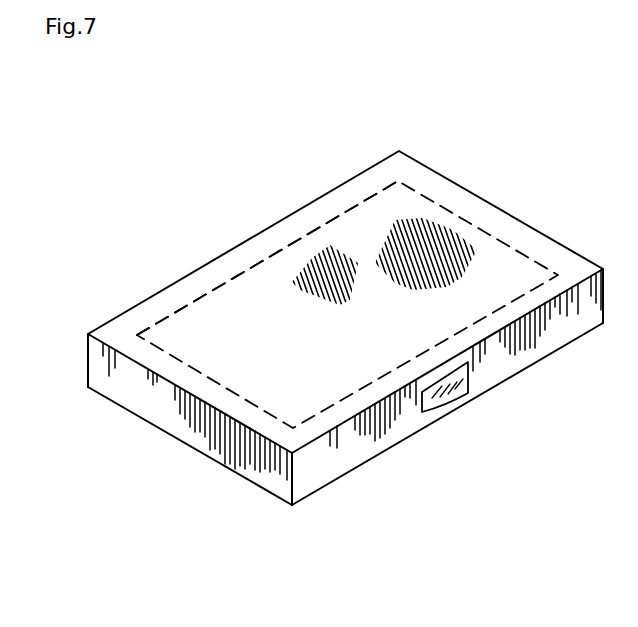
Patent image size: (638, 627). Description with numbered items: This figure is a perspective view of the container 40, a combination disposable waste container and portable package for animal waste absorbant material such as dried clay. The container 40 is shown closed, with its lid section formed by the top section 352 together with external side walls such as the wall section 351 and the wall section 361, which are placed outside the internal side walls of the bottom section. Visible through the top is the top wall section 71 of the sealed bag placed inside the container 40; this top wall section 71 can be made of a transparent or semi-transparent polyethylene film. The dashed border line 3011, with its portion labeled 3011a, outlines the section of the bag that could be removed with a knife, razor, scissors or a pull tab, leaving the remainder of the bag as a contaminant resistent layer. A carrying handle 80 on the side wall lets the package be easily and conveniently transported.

The container 40 is at (86, 368).
The border line 3011 is at (288, 247).
The groove portion 3011a is at (207, 293).
The top section 352 is at (527, 242).
The wall section 351 is at (447, 387).
The wall section 361 is at (168, 412).
The top wall section 71 is at (286, 360).
The carrying handle 80 is at (440, 403).